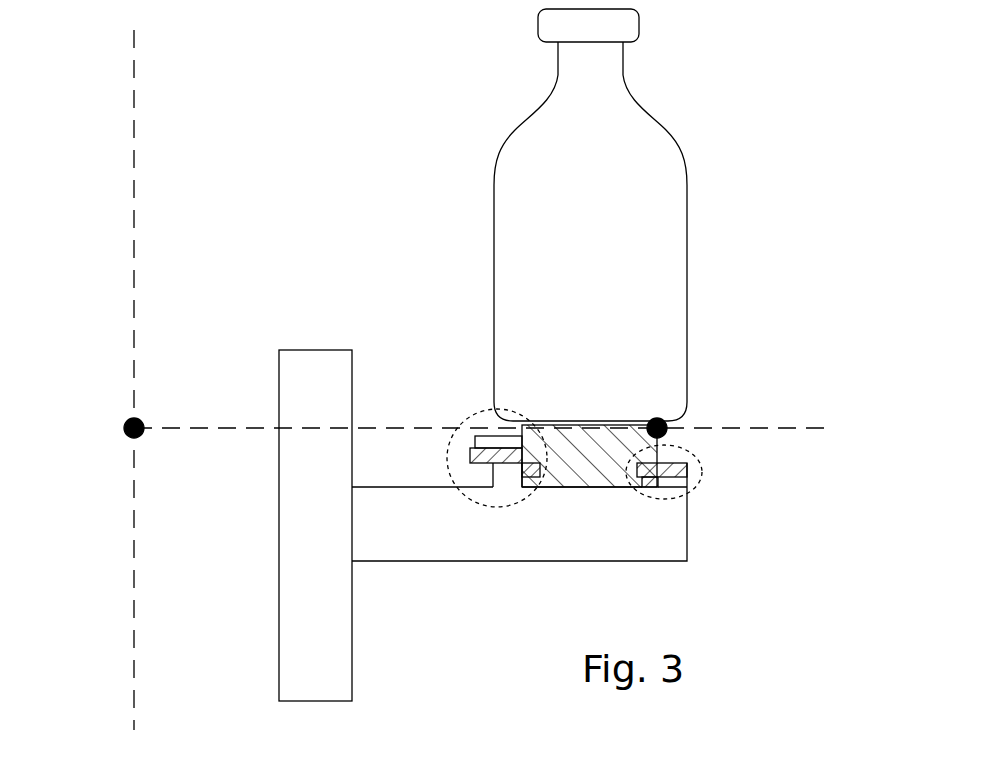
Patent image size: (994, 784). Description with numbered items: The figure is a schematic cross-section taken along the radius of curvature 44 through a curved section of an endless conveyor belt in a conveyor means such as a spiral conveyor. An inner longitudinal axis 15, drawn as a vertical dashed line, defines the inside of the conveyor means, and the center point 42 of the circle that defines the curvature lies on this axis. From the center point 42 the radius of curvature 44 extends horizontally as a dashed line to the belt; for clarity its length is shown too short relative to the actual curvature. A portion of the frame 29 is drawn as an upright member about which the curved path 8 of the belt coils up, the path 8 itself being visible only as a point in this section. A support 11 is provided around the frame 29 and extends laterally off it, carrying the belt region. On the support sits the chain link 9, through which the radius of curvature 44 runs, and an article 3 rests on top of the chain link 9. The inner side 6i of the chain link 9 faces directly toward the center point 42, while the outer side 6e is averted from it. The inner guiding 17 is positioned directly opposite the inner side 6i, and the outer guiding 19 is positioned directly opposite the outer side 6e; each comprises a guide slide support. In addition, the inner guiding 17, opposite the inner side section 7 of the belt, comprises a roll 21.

The article 3 is at (596, 243).
The inner side 6i is at (512, 430).
The outer side 6e is at (646, 481).
The inner side section 7 is at (503, 441).
The curved path 8 is at (665, 425).
The chain link 9 is at (591, 464).
The support 11 is at (552, 538).
The inner longitudinal axis 15 is at (135, 169).
The inner guiding 17 is at (447, 450).
The outer guiding 19 is at (698, 478).
The roll 21 is at (491, 437).
The frame 29 is at (328, 662).
The center point 42 is at (124, 426).
The radius of curvature 44 is at (208, 427).